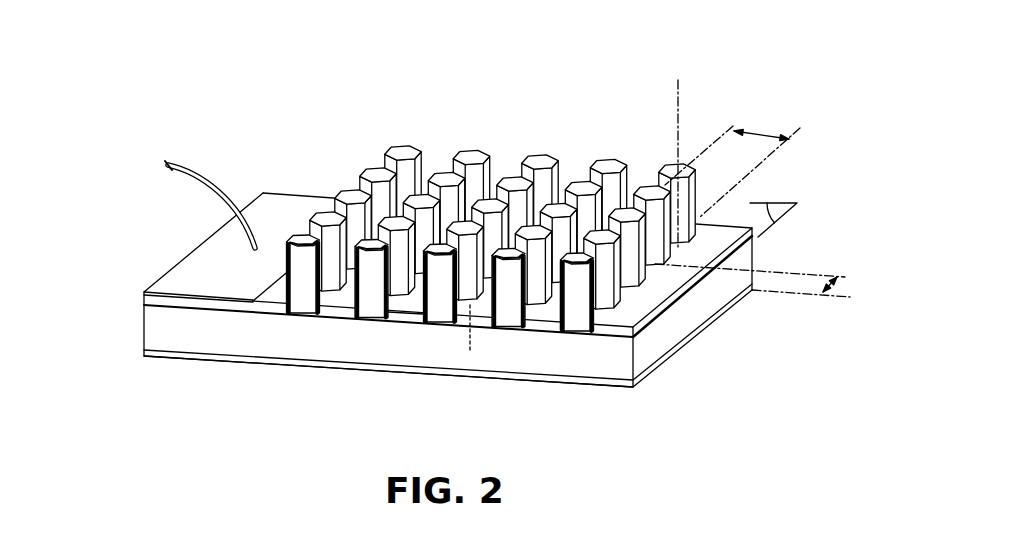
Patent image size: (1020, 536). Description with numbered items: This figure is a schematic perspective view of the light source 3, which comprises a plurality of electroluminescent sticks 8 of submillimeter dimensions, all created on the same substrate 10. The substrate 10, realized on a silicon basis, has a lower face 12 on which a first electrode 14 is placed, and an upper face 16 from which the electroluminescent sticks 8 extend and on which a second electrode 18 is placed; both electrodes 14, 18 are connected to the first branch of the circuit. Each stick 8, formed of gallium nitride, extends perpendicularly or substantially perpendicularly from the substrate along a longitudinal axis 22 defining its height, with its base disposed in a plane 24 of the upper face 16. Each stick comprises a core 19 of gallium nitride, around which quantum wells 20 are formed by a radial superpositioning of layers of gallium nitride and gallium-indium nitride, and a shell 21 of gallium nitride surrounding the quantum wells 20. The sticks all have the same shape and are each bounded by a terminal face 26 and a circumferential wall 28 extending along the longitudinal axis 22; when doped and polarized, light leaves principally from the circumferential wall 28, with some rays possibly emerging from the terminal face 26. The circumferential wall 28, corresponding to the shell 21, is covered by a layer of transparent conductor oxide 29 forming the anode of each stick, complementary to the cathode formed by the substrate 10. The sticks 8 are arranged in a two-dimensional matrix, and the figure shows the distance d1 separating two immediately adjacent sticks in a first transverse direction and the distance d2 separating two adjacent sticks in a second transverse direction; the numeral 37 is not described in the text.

The light source 3 is at (137, 195).
The electroluminescent stick 8 is at (696, 182).
The substrate 10 is at (173, 333).
The lower face 12 is at (222, 363).
The first electrode 14 is at (288, 358).
The upper face 16 is at (628, 328).
The second electrode 18 is at (286, 205).
The core 19 is at (580, 325).
The quantum wells 20 is at (563, 323).
The shell 21 is at (322, 312).
The longitudinal axis 22 is at (682, 92).
The plane 24 is at (785, 220).
The terminal face 26 is at (472, 157).
The circumferential wall 28 is at (602, 178).
The layer of transparent conductor oxide 29 is at (417, 313).
The hidden line / gap 37 is at (470, 352).
The distance d1 is at (732, 162).
The distance d2 is at (760, 283).